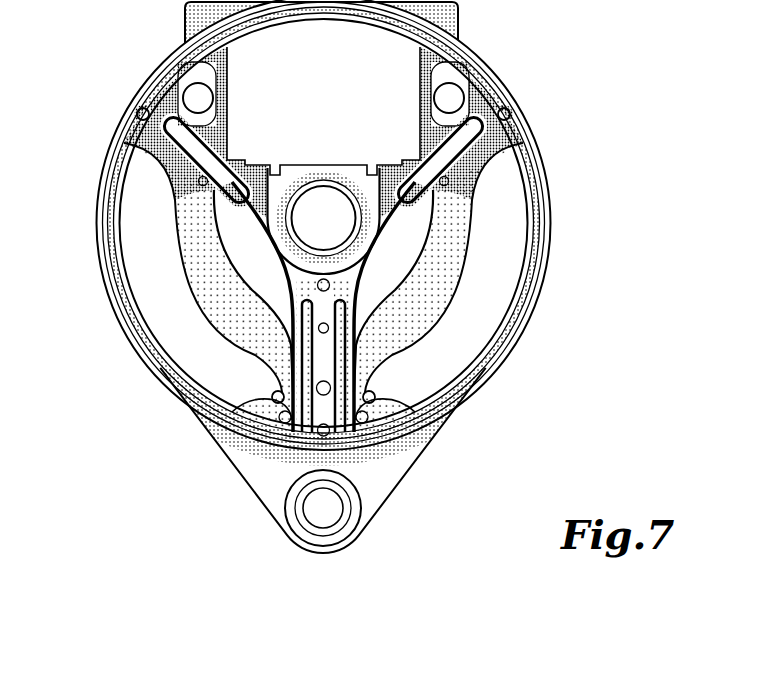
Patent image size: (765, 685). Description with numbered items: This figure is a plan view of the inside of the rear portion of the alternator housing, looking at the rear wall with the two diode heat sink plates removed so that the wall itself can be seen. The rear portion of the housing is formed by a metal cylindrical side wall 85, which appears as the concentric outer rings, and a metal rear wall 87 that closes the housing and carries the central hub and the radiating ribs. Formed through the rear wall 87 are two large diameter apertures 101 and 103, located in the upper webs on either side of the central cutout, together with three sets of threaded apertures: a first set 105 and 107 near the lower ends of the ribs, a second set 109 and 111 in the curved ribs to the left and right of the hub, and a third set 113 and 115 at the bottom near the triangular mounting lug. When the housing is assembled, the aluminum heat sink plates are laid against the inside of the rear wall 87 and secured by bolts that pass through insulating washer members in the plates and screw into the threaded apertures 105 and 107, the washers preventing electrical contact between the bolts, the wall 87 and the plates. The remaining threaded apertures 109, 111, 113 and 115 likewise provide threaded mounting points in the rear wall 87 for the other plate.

The metal cylindrical side wall 85 is at (140, 90).
The metal rear wall 87 is at (506, 92).
The large diameter aperture 101 is at (452, 95).
The large diameter aperture 103 is at (195, 93).
The threaded aperture 105 is at (372, 392).
The threaded aperture 107 is at (275, 392).
The threaded aperture 109 is at (452, 190).
The threaded aperture 111 is at (195, 190).
The threaded aperture 113 is at (425, 408).
The threaded aperture 115 is at (222, 408).